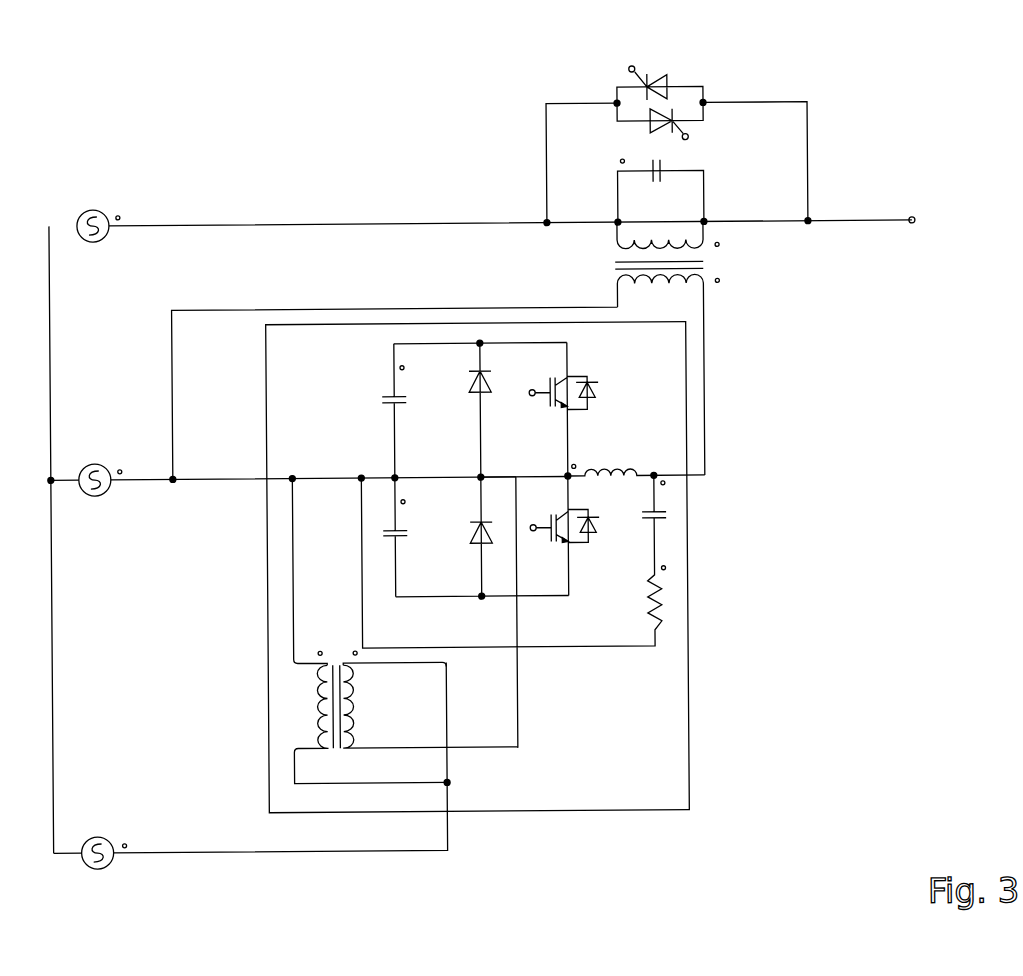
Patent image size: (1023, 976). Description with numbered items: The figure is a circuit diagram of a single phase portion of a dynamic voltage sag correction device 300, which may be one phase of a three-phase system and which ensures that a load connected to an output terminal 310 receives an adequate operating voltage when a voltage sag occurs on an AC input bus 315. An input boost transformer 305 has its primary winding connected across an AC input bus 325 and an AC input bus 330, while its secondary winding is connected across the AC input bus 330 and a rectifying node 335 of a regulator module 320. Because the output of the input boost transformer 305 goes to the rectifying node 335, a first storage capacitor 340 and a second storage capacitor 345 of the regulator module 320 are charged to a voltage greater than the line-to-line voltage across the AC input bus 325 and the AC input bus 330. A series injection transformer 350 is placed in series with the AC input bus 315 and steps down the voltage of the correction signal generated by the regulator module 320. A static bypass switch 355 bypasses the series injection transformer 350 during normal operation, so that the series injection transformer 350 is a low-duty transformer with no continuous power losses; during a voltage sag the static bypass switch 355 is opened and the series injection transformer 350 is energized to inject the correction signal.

The dynamic voltage sag correction device 300 is at (275, 125).
The input boost transformer 305 is at (321, 711).
The output terminal 310 is at (916, 221).
The AC input bus 315 is at (175, 222).
The regulator module 320 is at (576, 663).
The AC input bus 325 is at (127, 483).
The AC input bus 330 is at (164, 847).
The rectifying node 335 is at (475, 473).
The first storage capacitor 340 is at (388, 392).
The second storage capacitor 345 is at (402, 536).
The series injection transformer 350 is at (702, 261).
The static bypass switch 355 is at (686, 88).